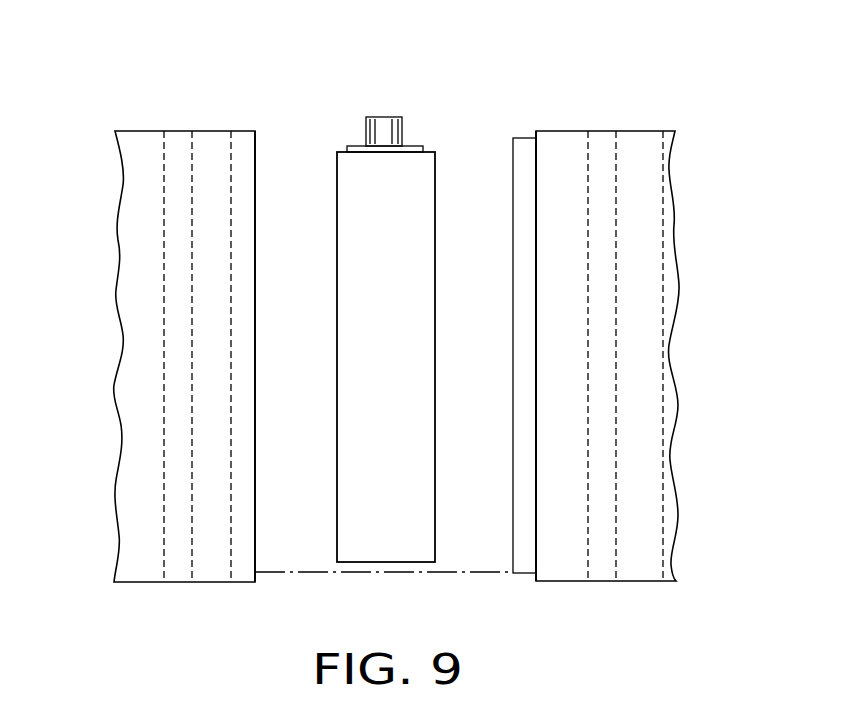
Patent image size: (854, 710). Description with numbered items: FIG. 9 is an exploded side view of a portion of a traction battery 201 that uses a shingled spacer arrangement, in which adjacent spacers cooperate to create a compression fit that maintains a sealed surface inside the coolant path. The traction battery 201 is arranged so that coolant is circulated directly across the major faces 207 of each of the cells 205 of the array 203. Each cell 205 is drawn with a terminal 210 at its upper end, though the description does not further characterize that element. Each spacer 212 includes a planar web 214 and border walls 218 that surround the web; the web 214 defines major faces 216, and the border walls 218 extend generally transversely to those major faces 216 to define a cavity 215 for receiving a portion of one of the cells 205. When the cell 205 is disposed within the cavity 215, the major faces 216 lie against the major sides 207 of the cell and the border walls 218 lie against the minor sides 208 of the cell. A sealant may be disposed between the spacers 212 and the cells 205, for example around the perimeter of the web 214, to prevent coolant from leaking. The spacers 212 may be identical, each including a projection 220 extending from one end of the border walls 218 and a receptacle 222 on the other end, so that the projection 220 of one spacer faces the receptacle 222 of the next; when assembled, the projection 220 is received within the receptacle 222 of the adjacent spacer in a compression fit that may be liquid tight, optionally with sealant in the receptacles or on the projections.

The traction battery 201 is at (150, 72).
The array 203 is at (698, 212).
The cell 205 is at (427, 147).
The major face 207 is at (338, 522).
The minor side 208 is at (402, 353).
The terminal 210 is at (385, 117).
The spacer 212 is at (228, 131).
The planar web 214 is at (603, 137).
The cavity 215 is at (552, 515).
The major face of web 216 is at (588, 166).
The border wall 218 is at (645, 131).
The projection 220 is at (525, 138).
The receptacle 222 is at (245, 142).